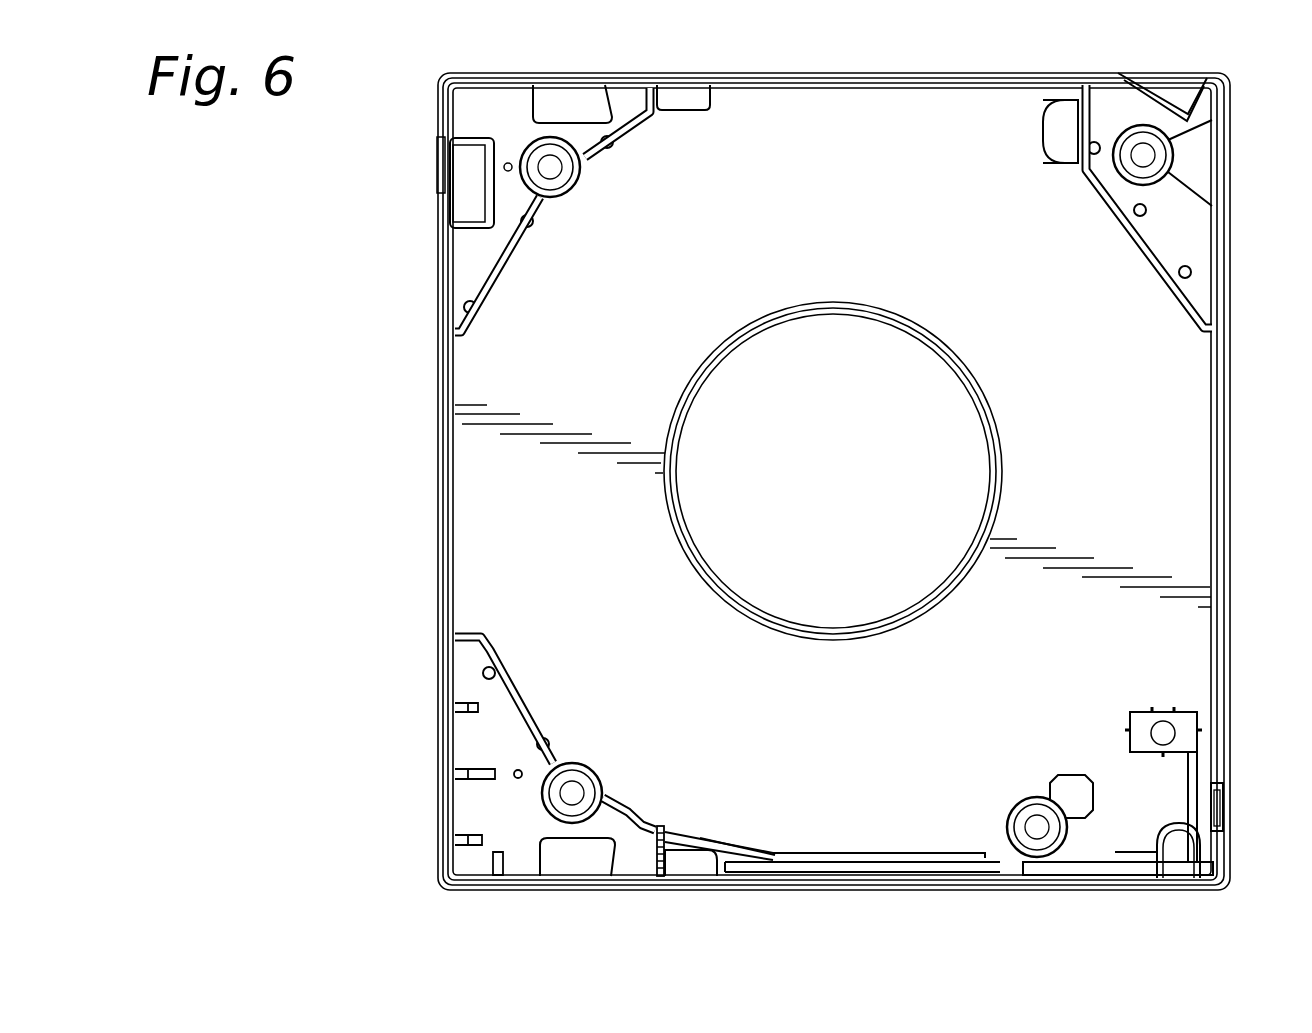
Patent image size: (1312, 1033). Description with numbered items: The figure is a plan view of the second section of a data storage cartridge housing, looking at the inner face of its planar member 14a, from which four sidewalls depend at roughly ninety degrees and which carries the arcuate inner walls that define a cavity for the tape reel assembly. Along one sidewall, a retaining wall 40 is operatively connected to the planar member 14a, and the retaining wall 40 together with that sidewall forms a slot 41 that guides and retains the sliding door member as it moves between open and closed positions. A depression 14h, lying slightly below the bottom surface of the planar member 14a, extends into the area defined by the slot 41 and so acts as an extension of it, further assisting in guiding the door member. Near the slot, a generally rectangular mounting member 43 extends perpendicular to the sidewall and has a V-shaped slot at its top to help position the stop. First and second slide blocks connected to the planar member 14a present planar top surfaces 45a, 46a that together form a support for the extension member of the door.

The planar member 14a is at (833, 481).
The depression 14h is at (1088, 862).
The retaining wall 40 is at (877, 852).
The slot 41 is at (944, 864).
The mounting member 43 is at (650, 828).
The planar top surface 45a is at (691, 866).
The planar top surface 46a is at (581, 863).